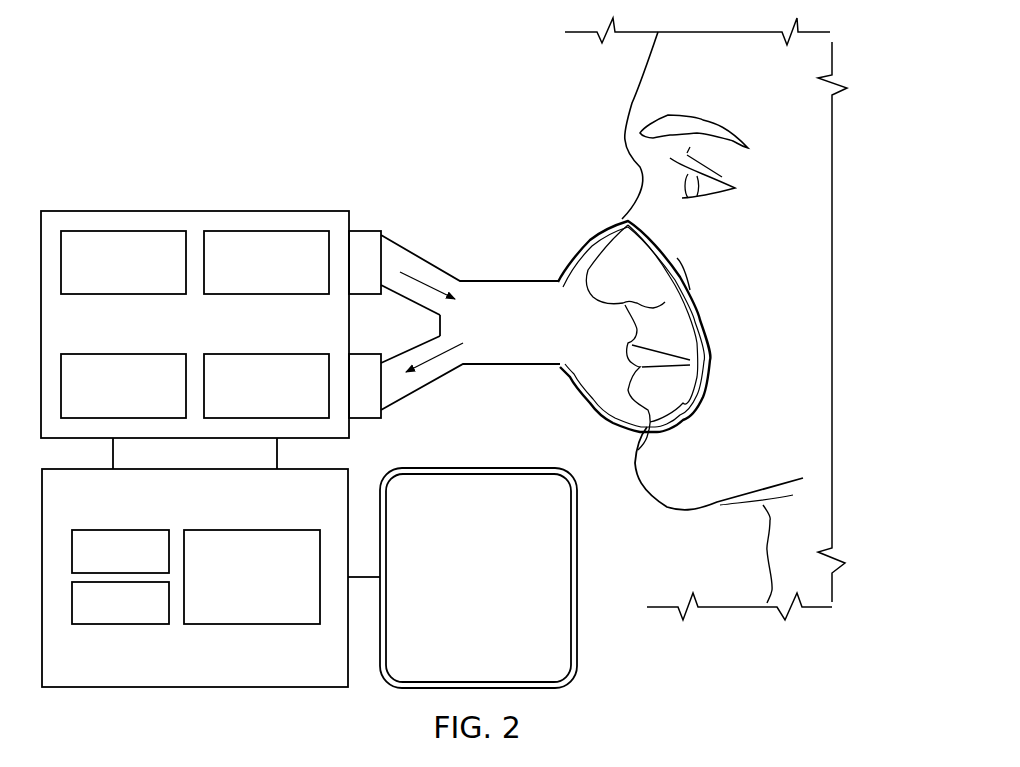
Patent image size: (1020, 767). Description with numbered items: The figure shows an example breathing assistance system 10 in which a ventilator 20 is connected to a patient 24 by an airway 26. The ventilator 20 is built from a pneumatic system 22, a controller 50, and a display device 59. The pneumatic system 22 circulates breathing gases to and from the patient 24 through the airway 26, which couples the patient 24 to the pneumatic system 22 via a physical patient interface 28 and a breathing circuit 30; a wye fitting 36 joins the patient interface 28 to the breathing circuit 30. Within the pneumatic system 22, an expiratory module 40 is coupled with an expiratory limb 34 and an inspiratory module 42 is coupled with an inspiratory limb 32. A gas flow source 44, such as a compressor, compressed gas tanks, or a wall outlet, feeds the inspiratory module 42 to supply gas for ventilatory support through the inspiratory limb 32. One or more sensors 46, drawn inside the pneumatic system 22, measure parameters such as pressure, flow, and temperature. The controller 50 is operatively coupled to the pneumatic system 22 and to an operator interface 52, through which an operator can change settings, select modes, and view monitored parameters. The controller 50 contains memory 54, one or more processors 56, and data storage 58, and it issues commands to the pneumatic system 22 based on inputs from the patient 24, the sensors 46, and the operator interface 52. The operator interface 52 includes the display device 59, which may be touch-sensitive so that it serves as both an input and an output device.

The breathing assistance system 10 is at (125, 113).
The ventilator 20 is at (514, 146).
The pneumatic system 22 is at (122, 208).
The patient 24 is at (638, 82).
The airway 26 is at (406, 211).
The physical patient interface 28 is at (603, 223).
The breathing circuit 30 is at (514, 278).
The inspiratory limb 32 is at (437, 262).
The expiratory limb 34 is at (437, 385).
The wye fitting 36 is at (440, 325).
The expiratory module 40 is at (142, 354).
The inspiratory module 42 is at (102, 295).
The gas flow source 44 is at (246, 295).
The sensors 46 is at (287, 354).
The controller 50 is at (141, 690).
The operator interface 52 is at (597, 667).
The memory 54 is at (120, 530).
The processors 56 is at (250, 624).
The data storage 58 is at (120, 624).
The display device 59 is at (466, 605).